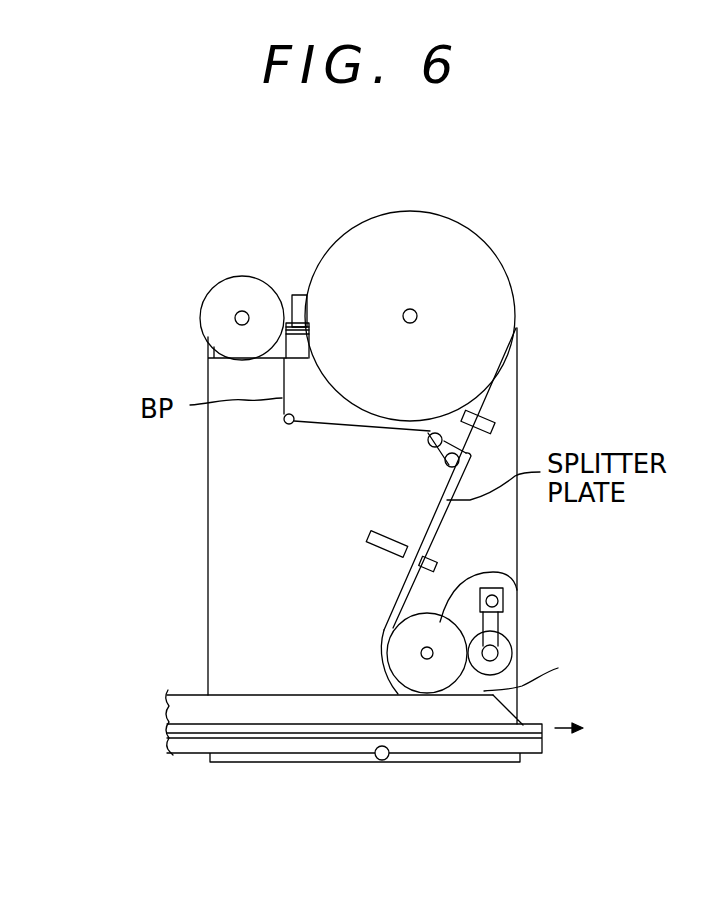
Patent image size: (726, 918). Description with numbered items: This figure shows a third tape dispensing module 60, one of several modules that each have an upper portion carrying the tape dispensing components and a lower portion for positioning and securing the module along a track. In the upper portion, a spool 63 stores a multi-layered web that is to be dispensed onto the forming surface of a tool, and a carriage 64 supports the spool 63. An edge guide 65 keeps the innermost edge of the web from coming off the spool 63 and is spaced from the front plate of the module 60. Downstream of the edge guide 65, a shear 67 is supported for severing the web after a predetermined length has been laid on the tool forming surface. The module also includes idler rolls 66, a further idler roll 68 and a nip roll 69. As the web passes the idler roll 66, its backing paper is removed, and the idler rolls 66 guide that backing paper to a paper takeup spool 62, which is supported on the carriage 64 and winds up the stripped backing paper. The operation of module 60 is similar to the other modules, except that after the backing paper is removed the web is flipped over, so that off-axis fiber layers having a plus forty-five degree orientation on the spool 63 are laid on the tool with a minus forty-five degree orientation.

The tape dispensing module 60 is at (408, 768).
The paper takeup spool 62 is at (213, 296).
The spool 63 is at (468, 225).
The carriage 64 is at (295, 295).
The edge guide 65 is at (493, 427).
The idler rolls 66 is at (433, 458).
The shear 67 is at (437, 556).
The idler roll 68 is at (446, 468).
The nip roll 69 is at (517, 590).